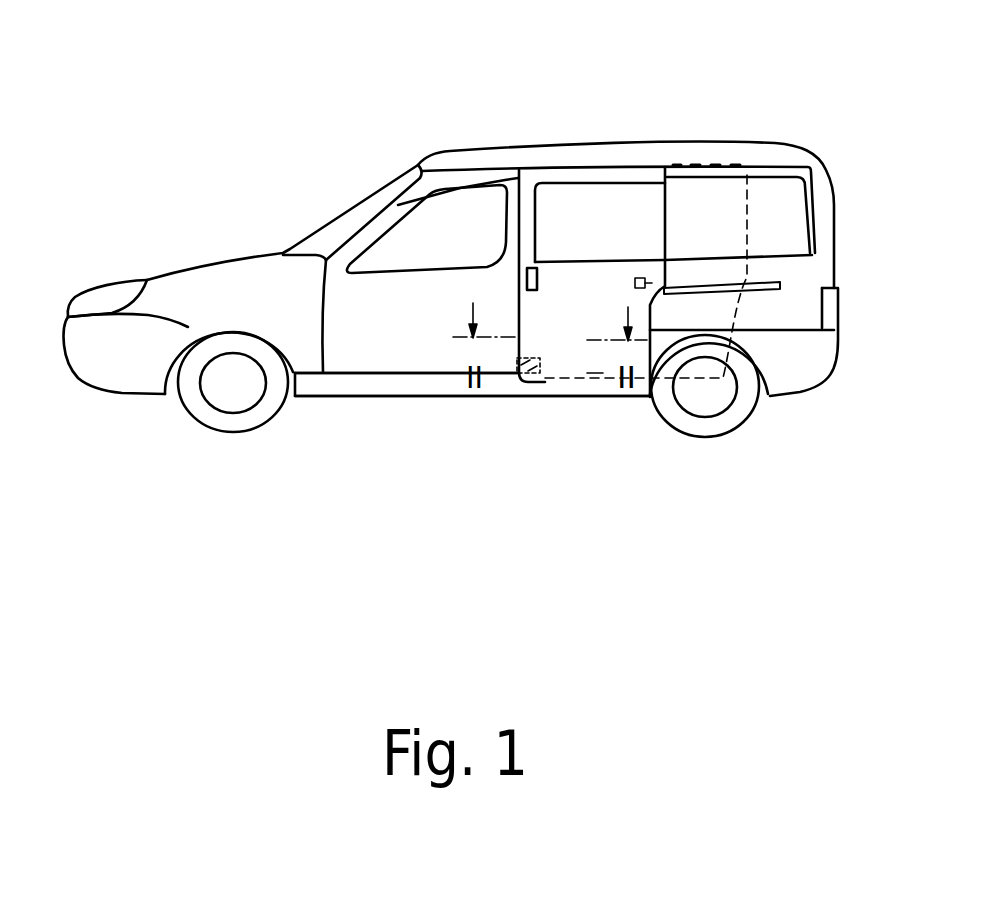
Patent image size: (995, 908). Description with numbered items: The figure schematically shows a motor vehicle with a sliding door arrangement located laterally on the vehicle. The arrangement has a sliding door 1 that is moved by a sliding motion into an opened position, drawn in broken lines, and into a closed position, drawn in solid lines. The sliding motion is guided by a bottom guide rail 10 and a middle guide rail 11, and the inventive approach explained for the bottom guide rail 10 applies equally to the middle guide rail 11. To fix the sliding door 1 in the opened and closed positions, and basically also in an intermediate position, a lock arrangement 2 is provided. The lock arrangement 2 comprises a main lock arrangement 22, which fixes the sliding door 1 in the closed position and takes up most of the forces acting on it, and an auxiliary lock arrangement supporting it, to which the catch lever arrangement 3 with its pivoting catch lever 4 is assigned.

The sliding door 1 is at (555, 352).
The lock arrangement 2 is at (553, 338).
The catch lever arrangement 3 is at (480, 430).
The catch lever 4 is at (505, 378).
The bottom guide rail 10 is at (578, 393).
The middle guide rail 11 is at (757, 287).
The main lock arrangement 22 is at (600, 373).